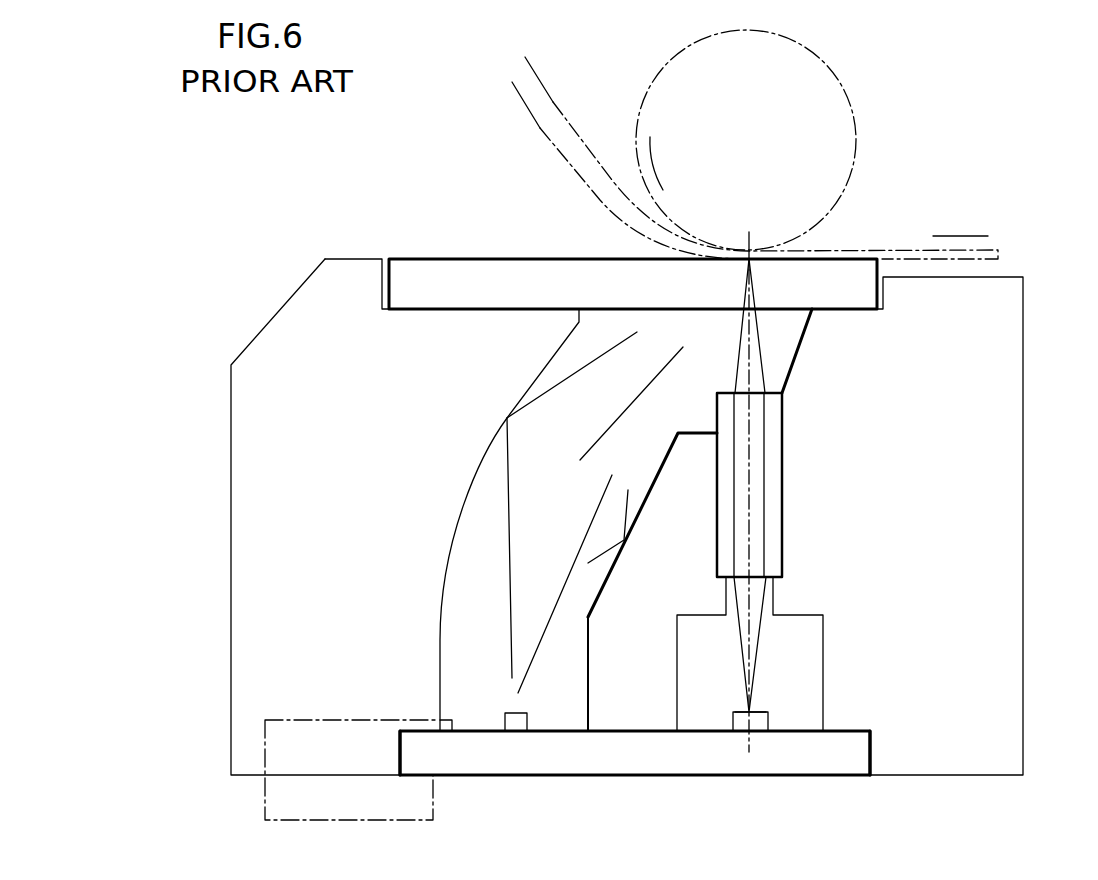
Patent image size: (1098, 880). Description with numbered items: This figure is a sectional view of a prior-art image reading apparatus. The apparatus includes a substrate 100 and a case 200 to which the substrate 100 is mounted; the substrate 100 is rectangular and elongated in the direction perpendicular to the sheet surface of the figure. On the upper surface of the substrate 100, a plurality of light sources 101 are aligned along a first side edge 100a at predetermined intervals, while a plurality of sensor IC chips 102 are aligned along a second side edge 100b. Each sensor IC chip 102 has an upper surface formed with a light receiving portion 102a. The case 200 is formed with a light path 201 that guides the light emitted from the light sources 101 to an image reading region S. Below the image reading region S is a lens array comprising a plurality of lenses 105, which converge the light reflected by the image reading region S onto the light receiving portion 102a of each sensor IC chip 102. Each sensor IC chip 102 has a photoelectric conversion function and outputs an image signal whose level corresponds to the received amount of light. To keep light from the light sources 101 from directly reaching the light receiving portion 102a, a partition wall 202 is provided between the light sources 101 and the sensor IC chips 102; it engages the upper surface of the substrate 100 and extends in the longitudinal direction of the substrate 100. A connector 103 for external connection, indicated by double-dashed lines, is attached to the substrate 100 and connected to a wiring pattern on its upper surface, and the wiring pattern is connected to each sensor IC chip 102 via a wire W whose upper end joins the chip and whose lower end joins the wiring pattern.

The case 200 is at (990, 300).
The light path 201 is at (626, 520).
The partition wall 202 is at (608, 698).
The lens 105 is at (740, 408).
The image reading region S is at (750, 258).
The sheet / document D is at (553, 102).
The wire W is at (792, 730).
The substrate 100 is at (622, 758).
The first side edge 100a is at (392, 723).
The second side edge 100b is at (872, 727).
The light source 101 is at (527, 718).
The sensor IC chip 102 is at (762, 723).
The light receiving portion 102a is at (748, 708).
The connector 103 is at (272, 805).